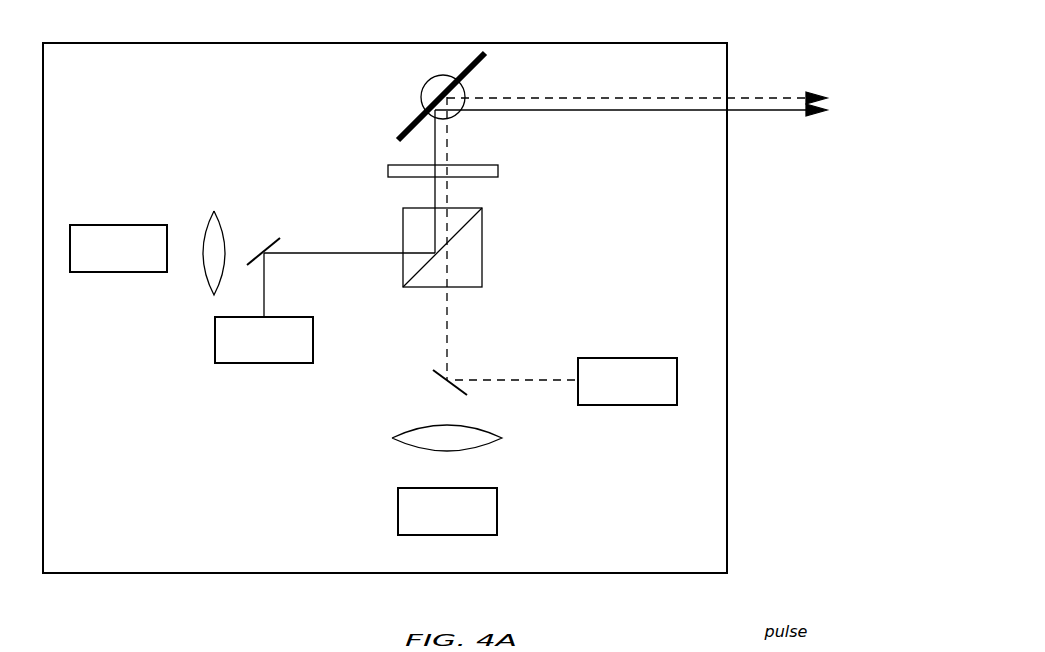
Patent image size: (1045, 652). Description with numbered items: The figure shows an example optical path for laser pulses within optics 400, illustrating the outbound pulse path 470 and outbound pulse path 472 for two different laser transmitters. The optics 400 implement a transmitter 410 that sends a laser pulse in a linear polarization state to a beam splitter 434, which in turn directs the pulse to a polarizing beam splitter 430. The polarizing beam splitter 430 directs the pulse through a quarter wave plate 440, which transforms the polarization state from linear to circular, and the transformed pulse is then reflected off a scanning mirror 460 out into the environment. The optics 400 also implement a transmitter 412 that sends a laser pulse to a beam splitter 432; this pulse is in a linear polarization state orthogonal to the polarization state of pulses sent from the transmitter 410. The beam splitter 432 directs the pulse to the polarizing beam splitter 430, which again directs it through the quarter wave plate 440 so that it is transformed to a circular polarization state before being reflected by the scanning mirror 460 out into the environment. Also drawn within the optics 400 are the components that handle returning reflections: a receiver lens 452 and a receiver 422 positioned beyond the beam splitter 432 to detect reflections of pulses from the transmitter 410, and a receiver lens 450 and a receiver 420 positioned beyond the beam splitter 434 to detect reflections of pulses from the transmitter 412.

The optics 400 is at (714, 559).
The transmitter 410 is at (641, 402).
The transmitter 412 is at (277, 360).
The receiver 420 is at (460, 532).
The receiver 422 is at (131, 269).
The polarizing beam splitter 430 is at (482, 270).
The beam splitter 432 is at (276, 240).
The beam splitter 434 is at (440, 378).
The quarter wave plate 440 is at (498, 171).
The receiver lens 450 is at (392, 438).
The receiver lens 452 is at (214, 211).
The scanning mirror 460 is at (422, 112).
The outbound pulse path 470 is at (781, 96).
The outbound pulse path 472 is at (770, 112).